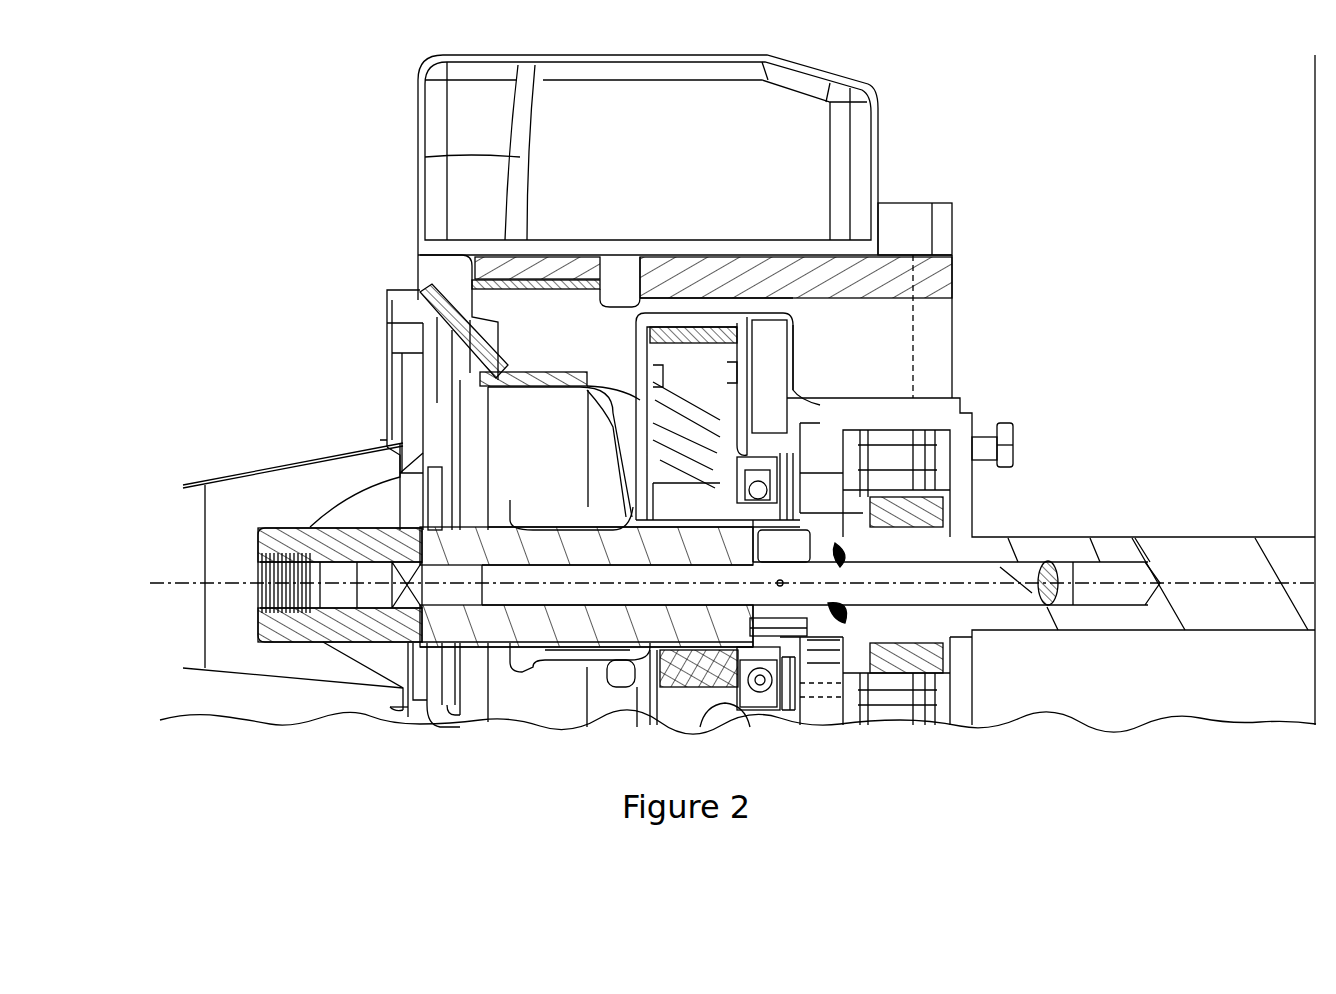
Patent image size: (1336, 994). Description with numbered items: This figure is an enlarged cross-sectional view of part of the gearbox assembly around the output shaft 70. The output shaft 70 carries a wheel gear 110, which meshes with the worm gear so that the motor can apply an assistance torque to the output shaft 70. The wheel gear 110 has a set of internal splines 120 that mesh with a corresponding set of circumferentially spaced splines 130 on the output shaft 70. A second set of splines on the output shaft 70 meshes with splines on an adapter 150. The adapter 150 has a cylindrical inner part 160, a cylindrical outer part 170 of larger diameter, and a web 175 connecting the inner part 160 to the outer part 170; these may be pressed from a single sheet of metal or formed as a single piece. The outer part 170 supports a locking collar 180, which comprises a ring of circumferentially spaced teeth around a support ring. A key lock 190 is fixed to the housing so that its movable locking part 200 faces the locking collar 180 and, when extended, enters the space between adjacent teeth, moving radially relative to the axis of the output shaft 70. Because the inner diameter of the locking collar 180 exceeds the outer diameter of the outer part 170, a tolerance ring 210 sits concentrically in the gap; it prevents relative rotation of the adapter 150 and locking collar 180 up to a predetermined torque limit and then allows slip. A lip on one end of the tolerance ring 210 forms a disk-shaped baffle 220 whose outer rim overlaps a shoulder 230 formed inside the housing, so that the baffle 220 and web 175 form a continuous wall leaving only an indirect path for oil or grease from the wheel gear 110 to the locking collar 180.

The output shaft 70 is at (297, 543).
The wheel gear 110 is at (748, 408).
The internal splines 120 is at (733, 607).
The splines 130 is at (860, 480).
The adapter 150 is at (578, 450).
The cylindrical inner part 160 is at (420, 527).
The cylindrical outer part 170 is at (462, 387).
The web 175 is at (640, 665).
The locking collar 180 is at (560, 380).
The key lock 190 is at (420, 173).
The movable locking part 200 is at (590, 355).
The tolerance ring 210 is at (593, 387).
The baffle 220 is at (753, 390).
The shoulder 230 is at (700, 300).